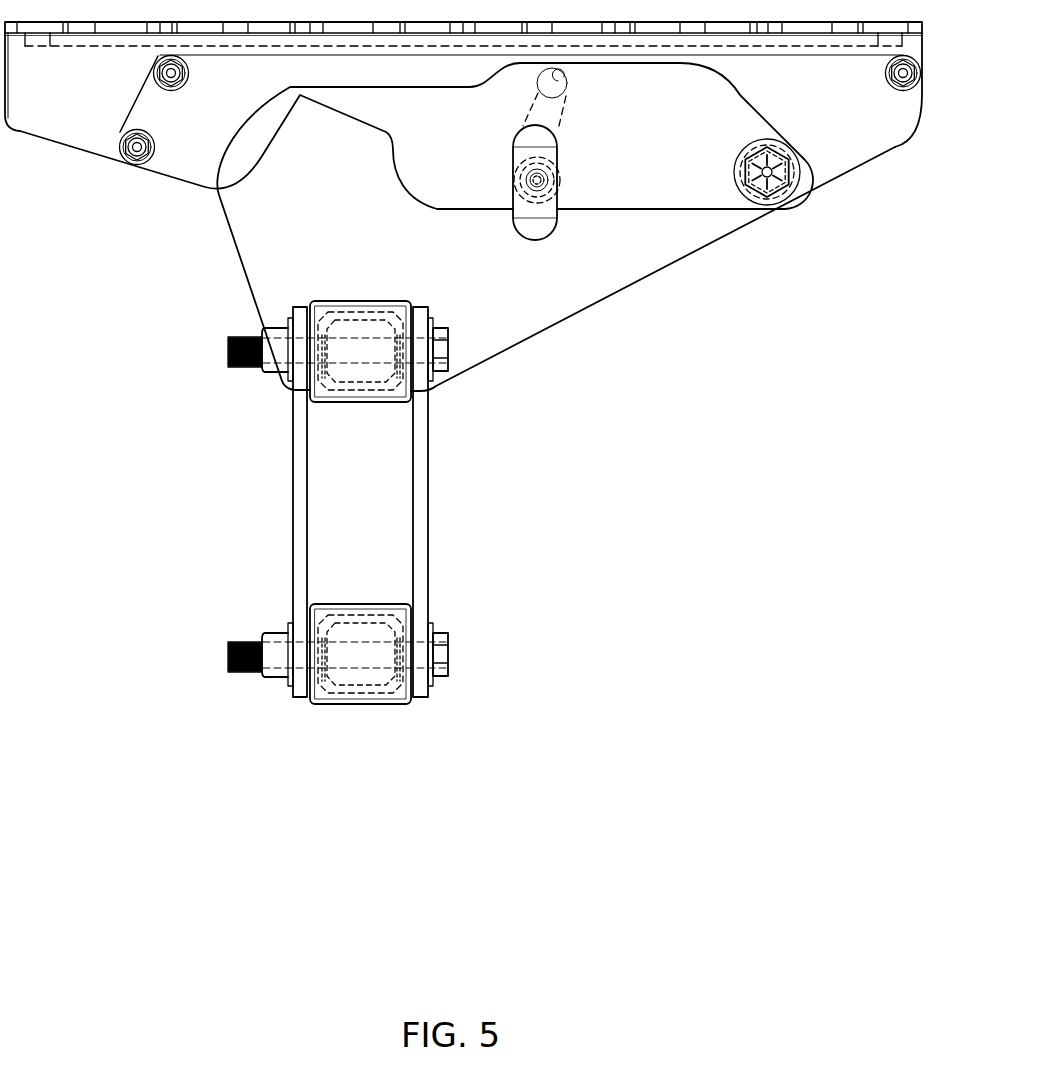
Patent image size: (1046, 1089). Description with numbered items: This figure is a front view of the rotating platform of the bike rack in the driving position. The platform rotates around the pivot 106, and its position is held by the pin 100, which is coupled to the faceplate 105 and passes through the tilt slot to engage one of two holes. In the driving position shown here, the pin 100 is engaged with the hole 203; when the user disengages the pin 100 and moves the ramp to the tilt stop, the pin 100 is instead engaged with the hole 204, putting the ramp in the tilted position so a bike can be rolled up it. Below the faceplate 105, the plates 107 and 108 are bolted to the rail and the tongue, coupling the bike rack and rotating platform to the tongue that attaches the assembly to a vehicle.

The pin 100 is at (530, 227).
The faceplate 105 is at (250, 247).
The pivot 106 is at (783, 180).
The plate 107 is at (428, 498).
The plate 108 is at (293, 498).
The hole 203 is at (557, 190).
The hole 204 is at (570, 85).